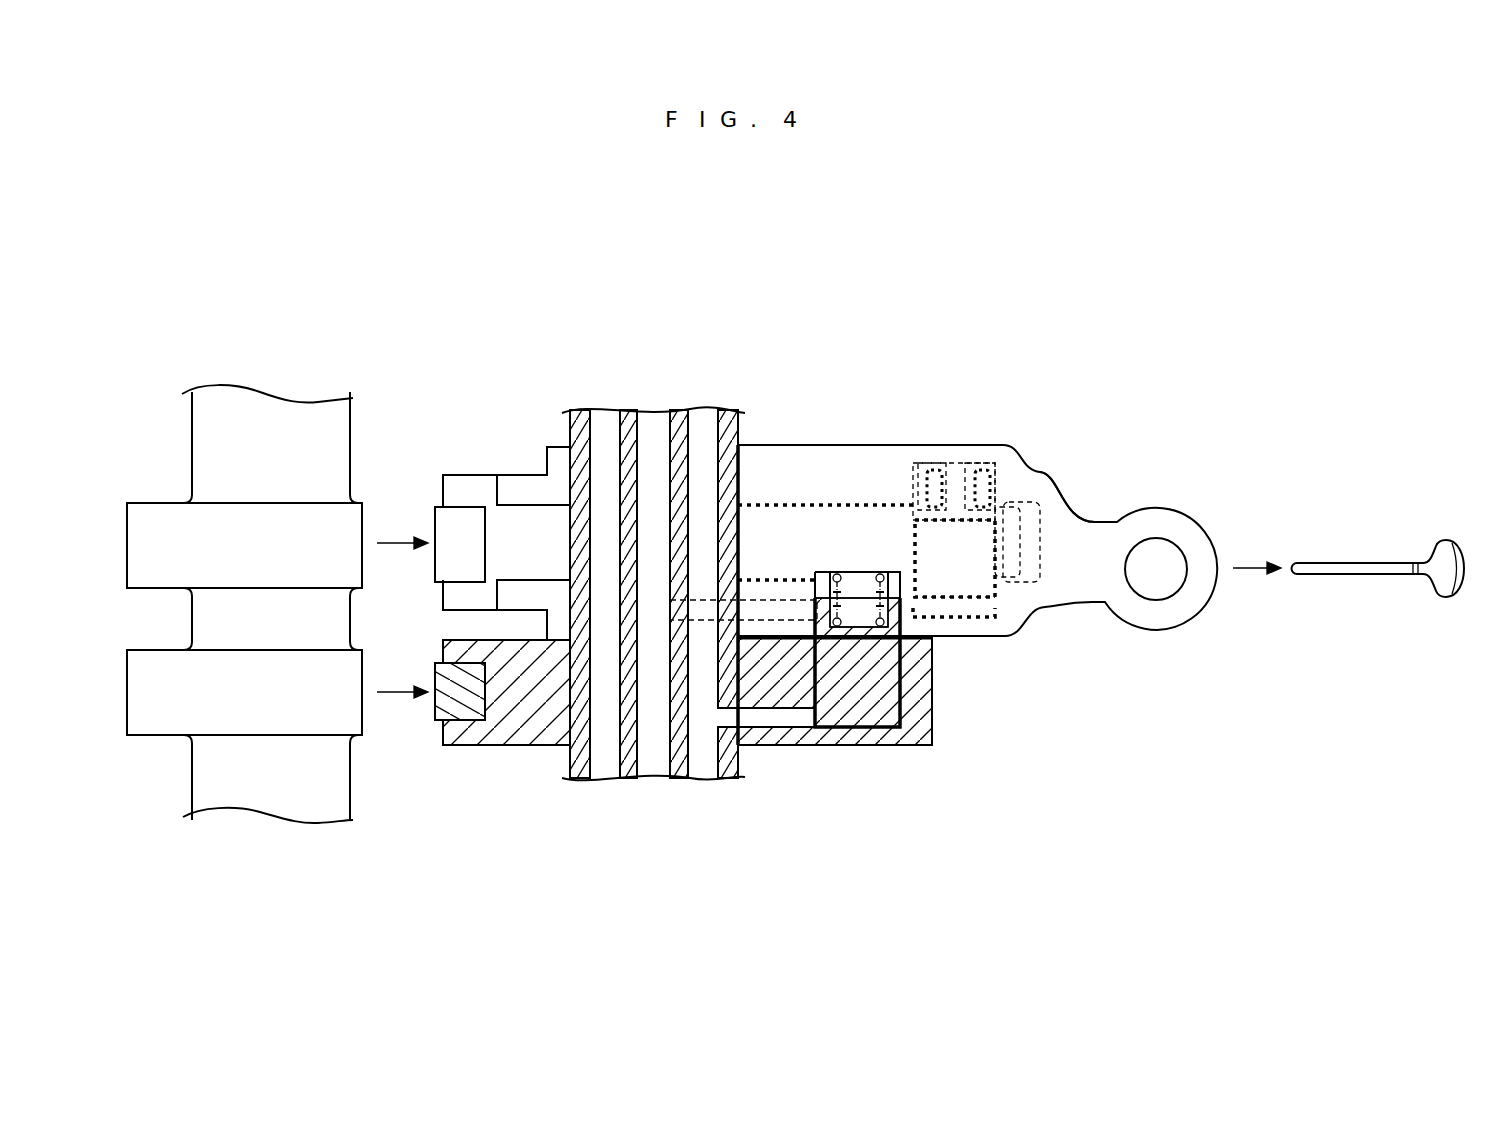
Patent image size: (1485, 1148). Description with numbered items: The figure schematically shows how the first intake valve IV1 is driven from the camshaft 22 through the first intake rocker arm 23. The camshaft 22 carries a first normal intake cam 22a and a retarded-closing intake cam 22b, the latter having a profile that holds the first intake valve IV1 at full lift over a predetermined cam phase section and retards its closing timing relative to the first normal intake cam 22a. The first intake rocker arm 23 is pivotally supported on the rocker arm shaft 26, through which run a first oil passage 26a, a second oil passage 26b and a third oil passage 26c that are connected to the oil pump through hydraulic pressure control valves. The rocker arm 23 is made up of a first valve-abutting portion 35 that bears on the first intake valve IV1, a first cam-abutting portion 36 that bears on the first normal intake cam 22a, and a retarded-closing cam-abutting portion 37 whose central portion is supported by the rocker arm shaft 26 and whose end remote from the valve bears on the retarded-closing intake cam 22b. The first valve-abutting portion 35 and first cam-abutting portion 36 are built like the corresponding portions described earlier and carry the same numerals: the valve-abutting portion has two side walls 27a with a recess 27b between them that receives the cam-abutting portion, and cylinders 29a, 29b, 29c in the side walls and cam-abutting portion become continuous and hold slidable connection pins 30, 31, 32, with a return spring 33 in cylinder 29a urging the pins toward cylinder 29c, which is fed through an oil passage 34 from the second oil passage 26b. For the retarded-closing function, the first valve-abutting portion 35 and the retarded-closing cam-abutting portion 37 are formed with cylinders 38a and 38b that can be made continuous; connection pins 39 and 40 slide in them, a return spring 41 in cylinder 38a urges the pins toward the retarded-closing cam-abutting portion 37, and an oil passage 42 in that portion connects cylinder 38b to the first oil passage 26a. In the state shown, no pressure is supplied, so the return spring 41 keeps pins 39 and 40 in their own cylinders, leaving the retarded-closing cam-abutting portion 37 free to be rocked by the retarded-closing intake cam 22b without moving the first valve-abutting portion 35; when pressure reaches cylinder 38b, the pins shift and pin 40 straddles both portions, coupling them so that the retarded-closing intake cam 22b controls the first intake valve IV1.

The camshaft 22 is at (356, 792).
The first normal intake cam 22a is at (355, 528).
The retarded-closing intake cam 22b is at (350, 700).
The first intake rocker arm 23 is at (1095, 316).
The rocker arm shaft 26 is at (625, 624).
The first oil passage 26a is at (701, 780).
The second oil passage 26b is at (650, 780).
The third oil passage 26c is at (603, 780).
The side wall of valve-abutting portion 27a is at (900, 460).
The recess of valve-abutting portion 27b is at (782, 505).
The cylinder 29a is at (985, 465).
The cylinder 29b is at (1020, 582).
The cylinder 29c is at (1003, 620).
The connection pin 30 is at (1005, 505).
The connection pin 31 is at (910, 560).
The connection pin 32 is at (968, 620).
The return spring 33 is at (940, 466).
The oil passage 34 is at (768, 622).
The first valve-abutting portion 35 is at (1043, 490).
The first cam-abutting portion 36 is at (463, 478).
The retarded-closing cam-abutting portion 37 is at (530, 740).
The cylinder 38a is at (890, 580).
The cylinder 38b is at (883, 712).
The connection pin 39 is at (912, 640).
The connection pin 40 is at (850, 710).
The return spring 41 is at (820, 570).
The oil passage 42 is at (797, 722).
The first intake valve IV1 is at (1346, 575).